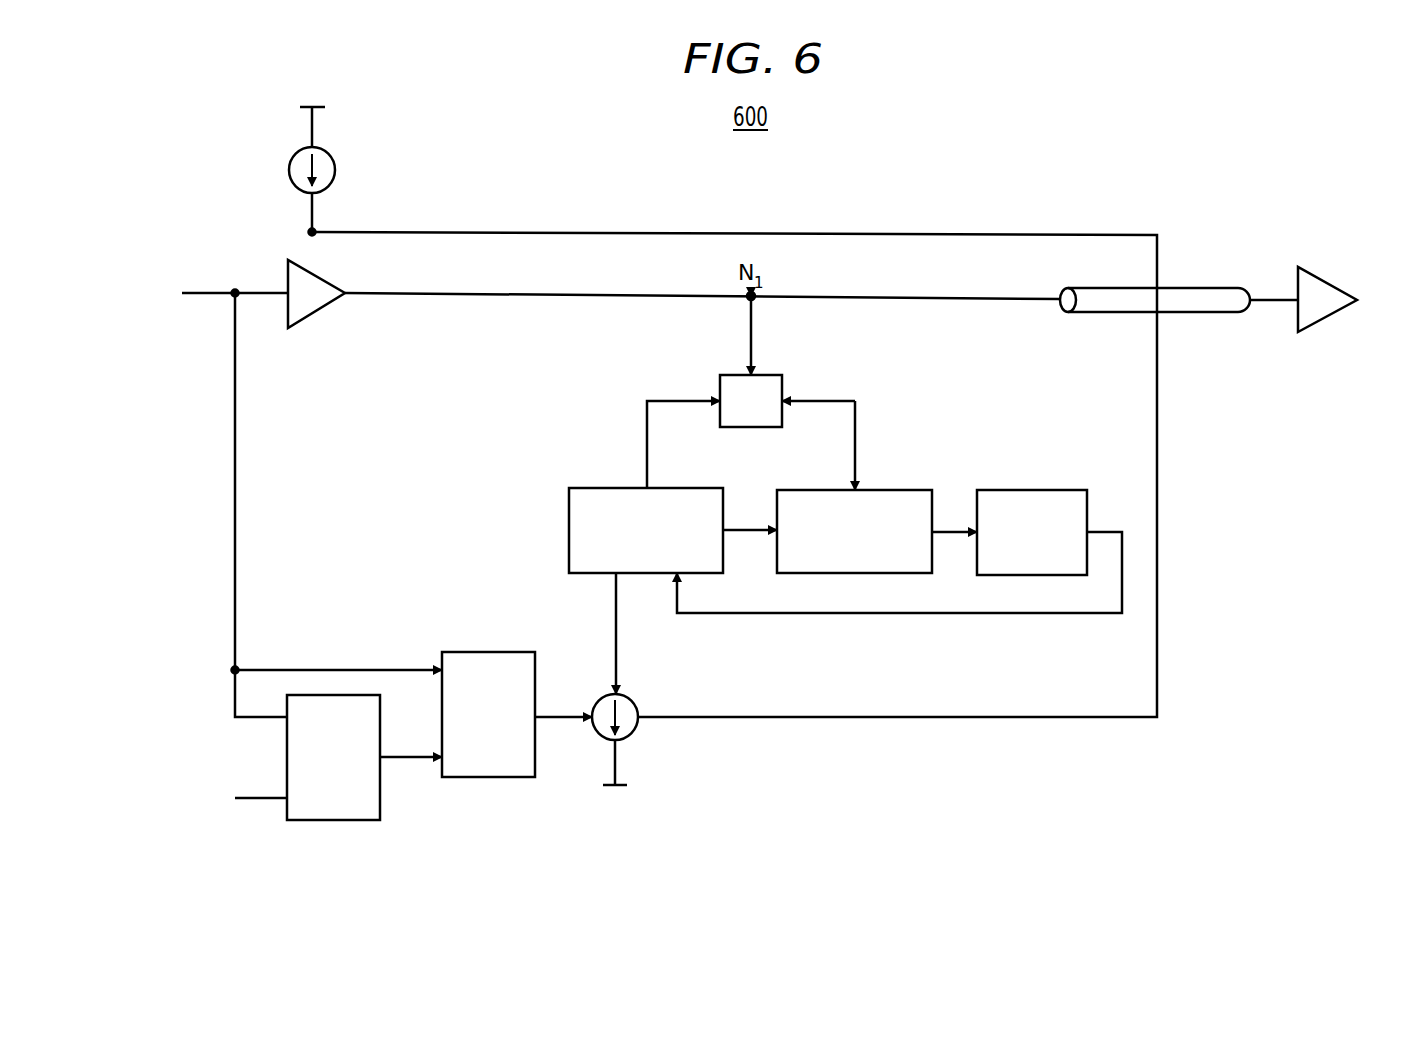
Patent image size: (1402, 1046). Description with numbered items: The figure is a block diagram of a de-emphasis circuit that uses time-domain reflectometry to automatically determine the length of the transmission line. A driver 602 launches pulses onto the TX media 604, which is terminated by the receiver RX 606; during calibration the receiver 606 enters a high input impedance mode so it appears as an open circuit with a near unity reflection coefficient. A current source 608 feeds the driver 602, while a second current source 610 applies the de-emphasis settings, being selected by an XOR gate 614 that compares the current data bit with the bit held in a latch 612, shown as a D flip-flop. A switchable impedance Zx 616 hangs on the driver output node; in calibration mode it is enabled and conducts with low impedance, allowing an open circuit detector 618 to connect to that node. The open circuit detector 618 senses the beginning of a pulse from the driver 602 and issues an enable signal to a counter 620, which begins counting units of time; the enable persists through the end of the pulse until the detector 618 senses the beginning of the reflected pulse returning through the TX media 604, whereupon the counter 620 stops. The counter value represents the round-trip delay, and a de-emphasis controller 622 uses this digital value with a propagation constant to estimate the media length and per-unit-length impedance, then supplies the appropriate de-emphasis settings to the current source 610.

The driver 602 is at (288, 278).
The TX media 604 is at (1190, 288).
The RX 606 is at (1328, 272).
The current source 608 is at (336, 168).
The current source 610 is at (632, 701).
The latch 612 is at (330, 820).
The XOR gate 614 is at (492, 652).
The Zx 616 is at (772, 373).
The open circuit detector 618 is at (877, 489).
The counter 620 is at (1032, 489).
The de-emphasis controller 622 is at (677, 487).